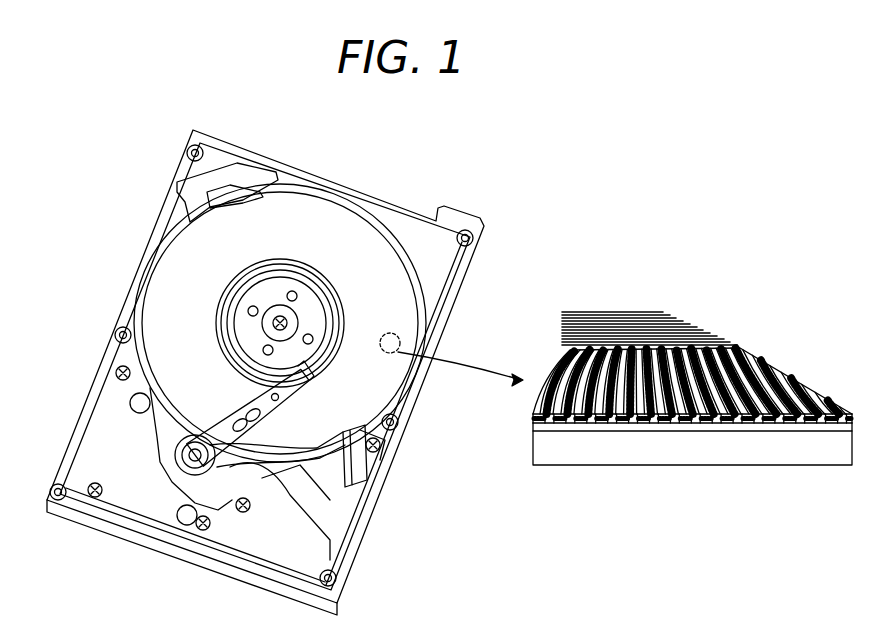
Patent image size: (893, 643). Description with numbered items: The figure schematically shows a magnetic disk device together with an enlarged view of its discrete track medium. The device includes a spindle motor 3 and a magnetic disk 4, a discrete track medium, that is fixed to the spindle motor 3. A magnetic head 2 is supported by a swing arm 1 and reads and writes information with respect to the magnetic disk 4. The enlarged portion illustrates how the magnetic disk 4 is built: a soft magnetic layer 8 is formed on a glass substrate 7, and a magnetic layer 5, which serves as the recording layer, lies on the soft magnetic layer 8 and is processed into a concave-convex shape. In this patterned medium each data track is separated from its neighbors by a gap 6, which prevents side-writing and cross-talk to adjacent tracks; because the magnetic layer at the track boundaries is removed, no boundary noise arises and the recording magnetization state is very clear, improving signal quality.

The swing arm 1 is at (297, 462).
The magnetic head 2 is at (307, 373).
The spindle motor 3 is at (283, 321).
The magnetic disk 4 is at (232, 286).
The magnetic layer 5 is at (612, 380).
The gap 6 is at (633, 423).
The glass substrate 7 is at (712, 453).
The soft magnetic layer 8 is at (790, 430).